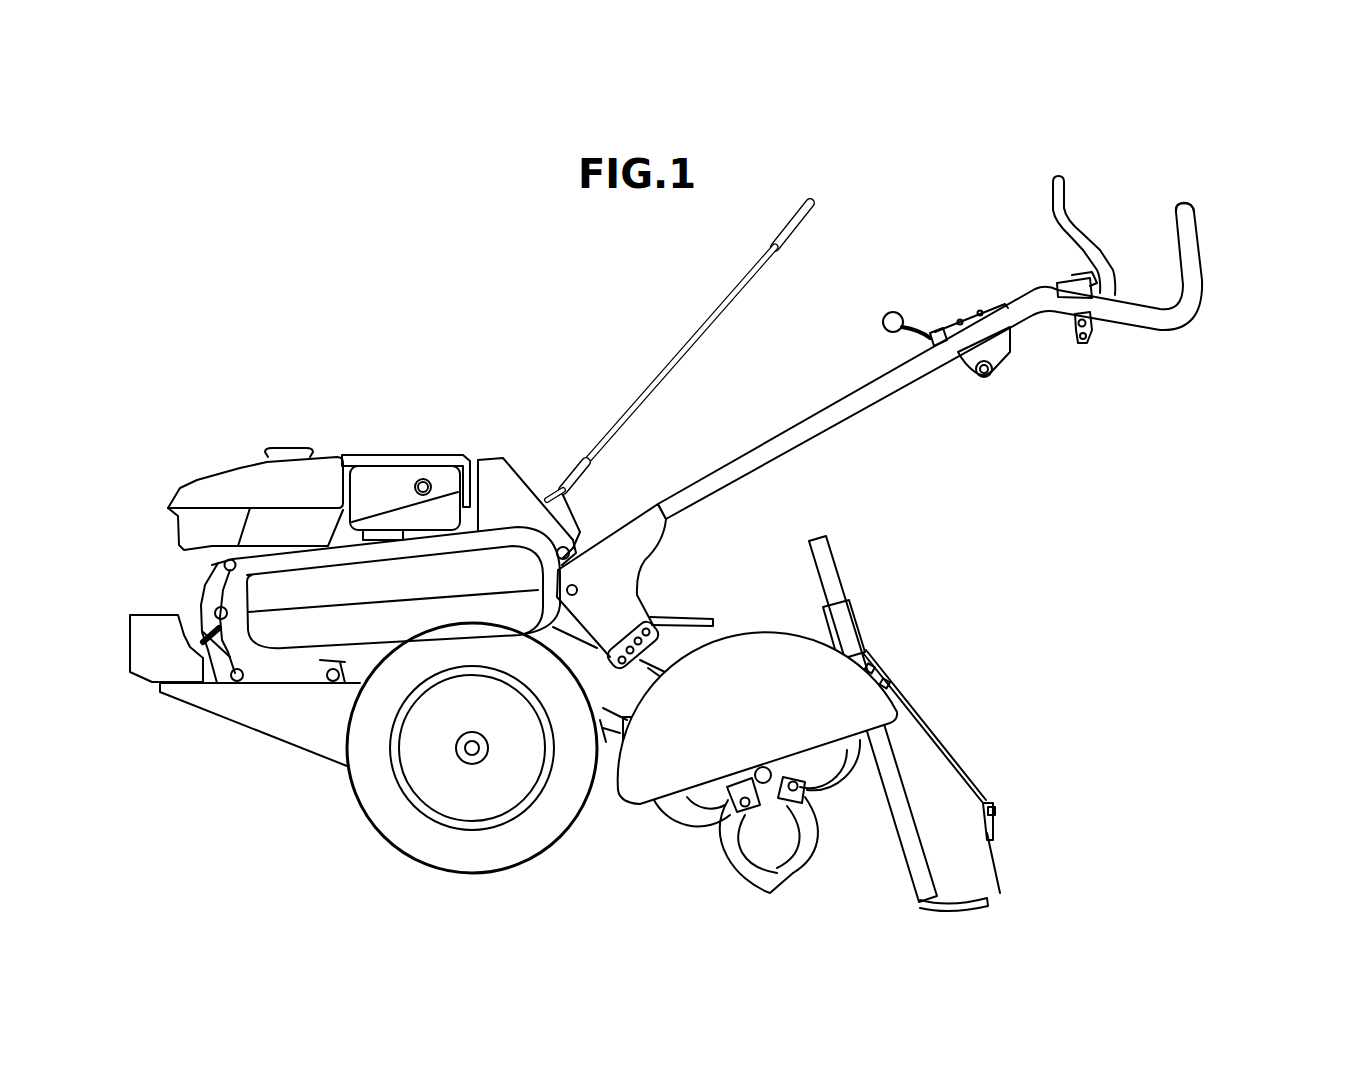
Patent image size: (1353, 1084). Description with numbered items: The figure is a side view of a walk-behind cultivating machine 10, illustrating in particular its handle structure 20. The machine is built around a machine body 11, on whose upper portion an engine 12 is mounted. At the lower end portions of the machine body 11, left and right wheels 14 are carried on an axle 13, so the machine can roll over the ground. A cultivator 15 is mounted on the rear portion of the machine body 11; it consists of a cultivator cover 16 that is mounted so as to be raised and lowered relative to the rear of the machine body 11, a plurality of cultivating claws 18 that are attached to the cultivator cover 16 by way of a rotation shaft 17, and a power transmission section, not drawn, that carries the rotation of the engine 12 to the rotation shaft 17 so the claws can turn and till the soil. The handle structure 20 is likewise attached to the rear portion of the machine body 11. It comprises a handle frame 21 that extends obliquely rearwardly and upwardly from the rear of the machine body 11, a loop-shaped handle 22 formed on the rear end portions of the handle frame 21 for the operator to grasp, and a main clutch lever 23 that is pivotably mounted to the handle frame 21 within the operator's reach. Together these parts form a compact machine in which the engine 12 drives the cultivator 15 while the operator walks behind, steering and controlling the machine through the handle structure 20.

The walk-behind cultivating machine 10 is at (418, 226).
The machine body 11 is at (280, 718).
The engine 12 is at (365, 455).
The axle 13 is at (465, 755).
The wheels 14 is at (501, 852).
The cultivator 15 is at (868, 656).
The cultivator cover 16 is at (745, 642).
The rotation shaft 17 is at (745, 835).
The cultivating claws 18 is at (840, 800).
The handle structure 20 is at (1117, 168).
The handle frame 21 is at (795, 418).
The loop-shaped handle 22 is at (1200, 248).
The main clutch lever 23 is at (1048, 204).